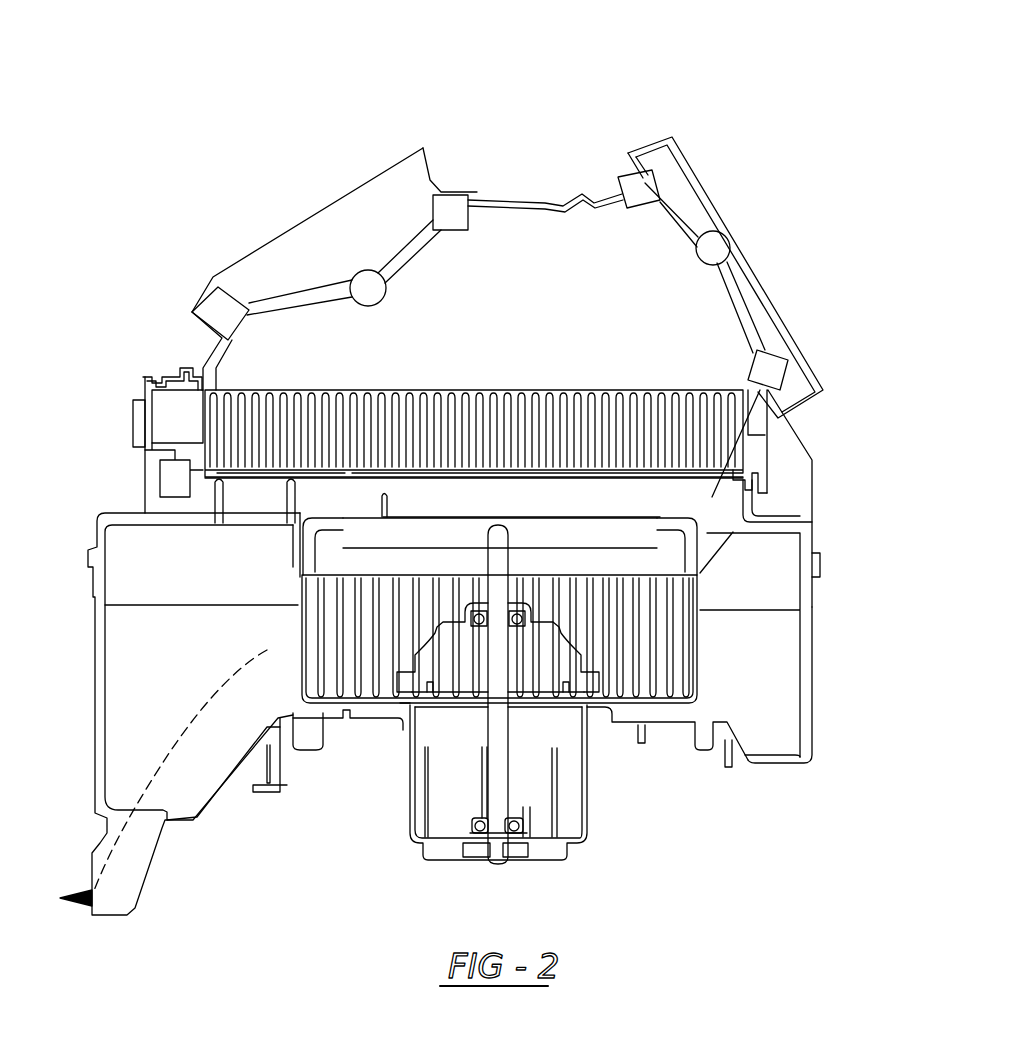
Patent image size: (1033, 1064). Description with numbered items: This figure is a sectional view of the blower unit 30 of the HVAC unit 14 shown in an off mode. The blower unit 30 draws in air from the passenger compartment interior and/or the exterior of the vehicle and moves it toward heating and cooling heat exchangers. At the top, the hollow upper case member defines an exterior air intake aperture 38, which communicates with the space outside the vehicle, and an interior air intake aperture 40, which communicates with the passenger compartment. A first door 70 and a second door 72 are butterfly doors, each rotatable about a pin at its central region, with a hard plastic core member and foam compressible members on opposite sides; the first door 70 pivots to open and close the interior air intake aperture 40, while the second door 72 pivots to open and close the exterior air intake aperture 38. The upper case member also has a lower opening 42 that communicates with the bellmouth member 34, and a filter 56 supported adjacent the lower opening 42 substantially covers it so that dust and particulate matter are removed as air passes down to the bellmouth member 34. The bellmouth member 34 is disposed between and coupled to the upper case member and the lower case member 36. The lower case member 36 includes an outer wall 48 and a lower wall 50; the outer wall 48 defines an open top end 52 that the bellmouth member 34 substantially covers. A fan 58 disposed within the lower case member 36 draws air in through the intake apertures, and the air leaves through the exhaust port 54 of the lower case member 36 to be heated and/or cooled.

The HVAC unit 14 is at (158, 125).
The blower unit 30 is at (663, 87).
The bellmouth member 34 is at (723, 478).
The lower case member 36 is at (807, 652).
The exterior air intake aperture 38 is at (737, 172).
The interior air intake aperture 40 is at (273, 120).
The lower opening 42 is at (353, 387).
The outer wall 48 is at (807, 687).
The lower wall 50 is at (688, 725).
The top end 52 is at (767, 545).
The exhaust port 54 is at (90, 880).
The filter 56 is at (632, 402).
The fan 58 is at (405, 622).
The first door 70 is at (322, 240).
The second door 72 is at (767, 283).